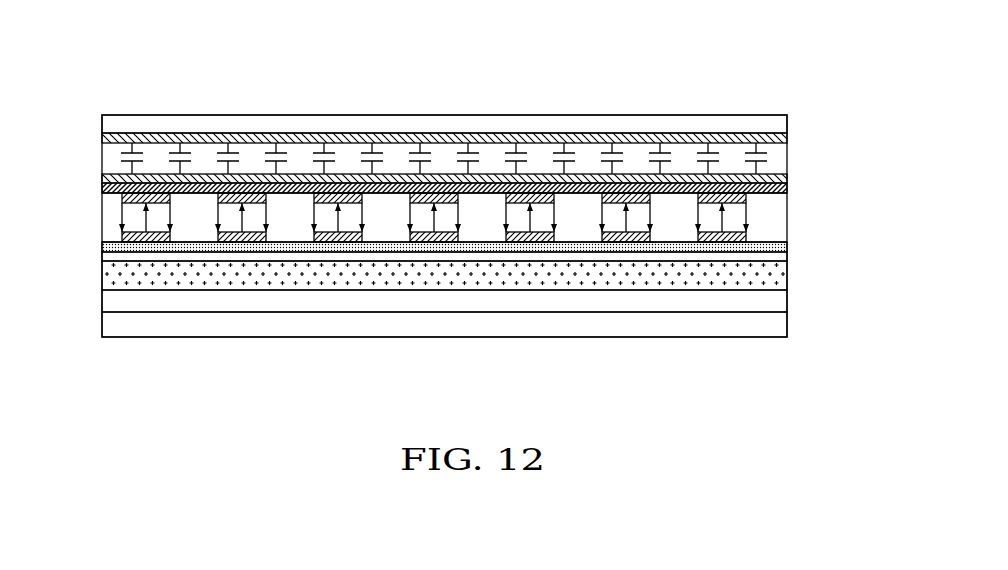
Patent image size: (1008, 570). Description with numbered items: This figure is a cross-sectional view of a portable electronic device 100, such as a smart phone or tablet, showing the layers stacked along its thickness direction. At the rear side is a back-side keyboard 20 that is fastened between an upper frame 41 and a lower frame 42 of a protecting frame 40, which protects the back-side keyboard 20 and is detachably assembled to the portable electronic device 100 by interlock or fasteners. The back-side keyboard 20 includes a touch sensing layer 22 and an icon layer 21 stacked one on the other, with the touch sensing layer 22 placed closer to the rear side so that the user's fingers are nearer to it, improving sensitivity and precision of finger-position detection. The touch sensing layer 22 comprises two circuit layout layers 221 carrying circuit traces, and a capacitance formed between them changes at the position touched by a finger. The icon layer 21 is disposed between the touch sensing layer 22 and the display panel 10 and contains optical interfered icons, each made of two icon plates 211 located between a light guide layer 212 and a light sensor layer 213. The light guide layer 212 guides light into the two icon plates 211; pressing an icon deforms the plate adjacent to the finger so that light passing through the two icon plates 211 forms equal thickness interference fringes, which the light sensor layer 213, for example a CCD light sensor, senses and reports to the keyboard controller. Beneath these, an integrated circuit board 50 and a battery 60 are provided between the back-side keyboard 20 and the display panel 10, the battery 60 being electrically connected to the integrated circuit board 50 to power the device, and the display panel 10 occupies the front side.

The portable electronic device 100 is at (452, 44).
The back-side keyboard 20 is at (81, 127).
The touch sensing layer 22 is at (100, 133).
The circuit layout layer 221 is at (780, 142).
The icon layer 21 is at (100, 193).
The icon plate 211 is at (343, 200).
The light guide layer 212 is at (780, 190).
The light sensor layer 213 is at (764, 244).
The protecting frame 40 is at (705, 63).
The upper frame 41 is at (683, 127).
The lower frame 42 is at (578, 257).
The battery 60 is at (555, 280).
The integrated circuit board 50 is at (632, 300).
The display panel 10 is at (703, 323).